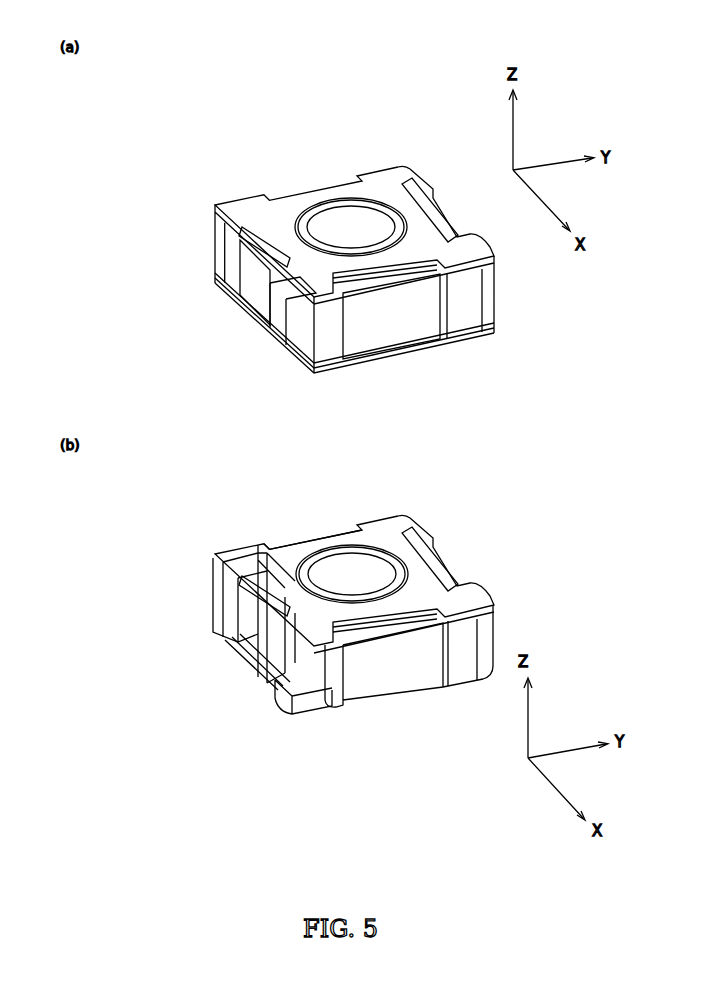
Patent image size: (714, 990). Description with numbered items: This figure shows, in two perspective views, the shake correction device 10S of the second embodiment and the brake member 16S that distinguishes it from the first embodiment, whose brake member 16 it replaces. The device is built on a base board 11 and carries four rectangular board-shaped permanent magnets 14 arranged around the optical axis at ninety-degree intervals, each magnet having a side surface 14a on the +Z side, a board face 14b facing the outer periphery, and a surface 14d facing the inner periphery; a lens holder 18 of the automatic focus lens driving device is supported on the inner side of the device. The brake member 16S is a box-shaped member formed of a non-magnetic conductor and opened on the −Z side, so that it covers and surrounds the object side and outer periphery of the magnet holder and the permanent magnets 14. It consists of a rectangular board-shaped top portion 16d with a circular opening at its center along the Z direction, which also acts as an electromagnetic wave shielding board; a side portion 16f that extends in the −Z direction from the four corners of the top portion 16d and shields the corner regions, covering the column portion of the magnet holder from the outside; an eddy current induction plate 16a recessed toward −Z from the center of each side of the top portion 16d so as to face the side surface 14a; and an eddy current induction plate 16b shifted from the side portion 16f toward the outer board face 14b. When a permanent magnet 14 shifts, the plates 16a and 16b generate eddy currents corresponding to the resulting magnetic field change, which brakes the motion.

The shake correction device 10S is at (199, 137).
The base board 11 is at (236, 316).
The brake member 16S is at (396, 163).
The lens holder 18 is at (358, 230).
The permanent magnet 14 is at (345, 545).
The side surface of +Z side of the permanent magnet 14a is at (258, 580).
The surface facing the outside of the permanent magnet 14b is at (262, 660).
The surface facing the inside of the permanent magnet 14d is at (360, 530).
The brake member 16 is at (324, 625).
The eddy current induction plate of +Z side 16a is at (250, 545).
The eddy current induction plate of the radial direction 16b is at (217, 600).
The top portion 16d is at (297, 547).
The side portion 16f is at (297, 707).